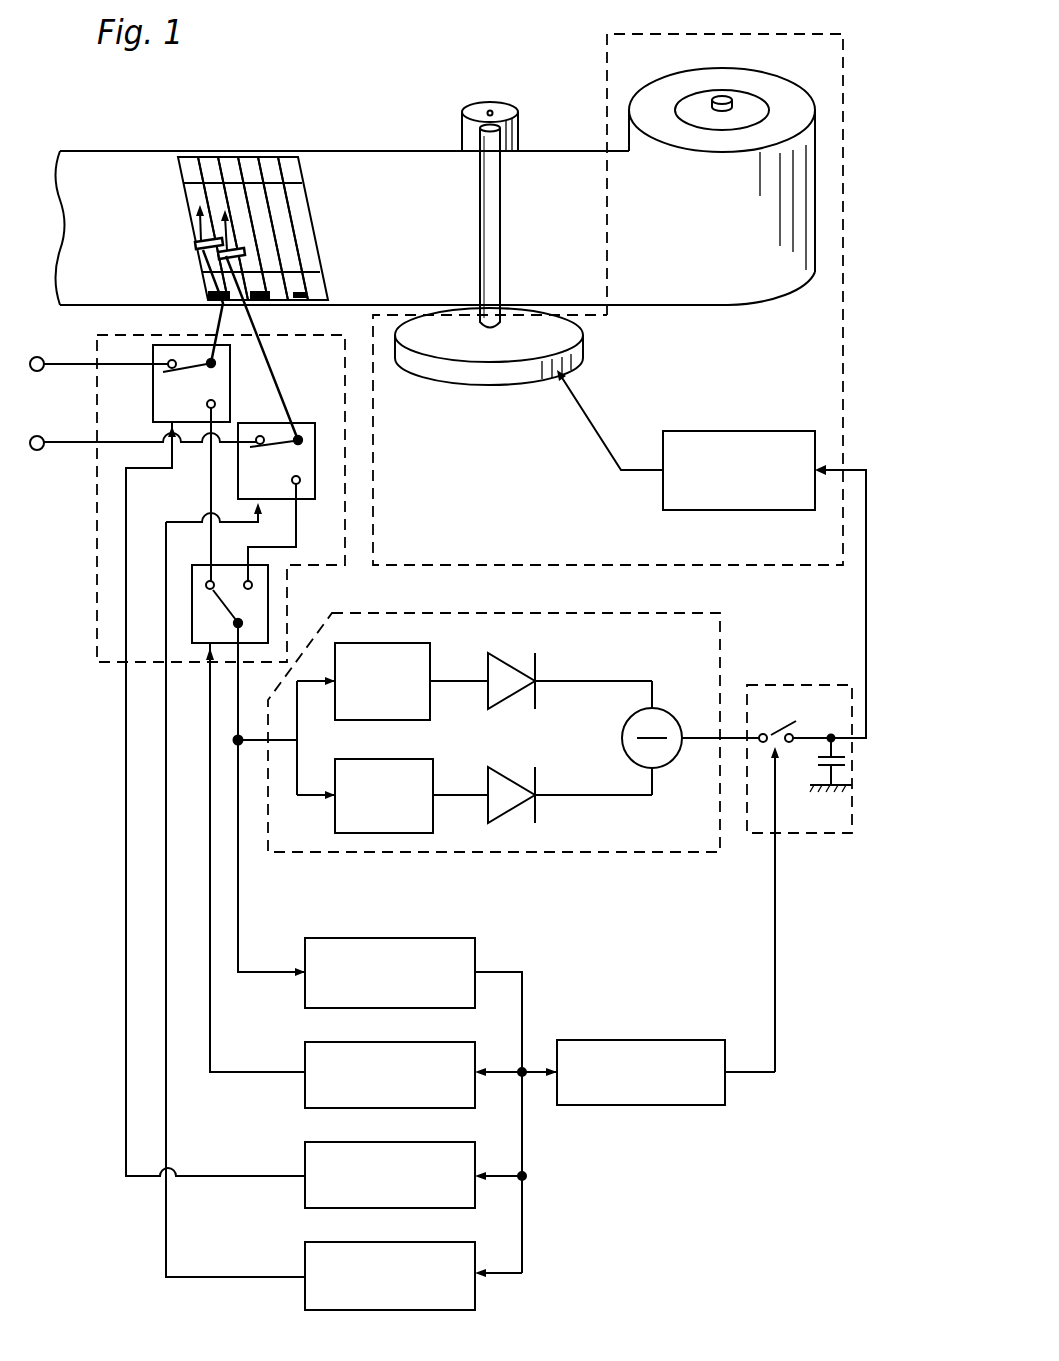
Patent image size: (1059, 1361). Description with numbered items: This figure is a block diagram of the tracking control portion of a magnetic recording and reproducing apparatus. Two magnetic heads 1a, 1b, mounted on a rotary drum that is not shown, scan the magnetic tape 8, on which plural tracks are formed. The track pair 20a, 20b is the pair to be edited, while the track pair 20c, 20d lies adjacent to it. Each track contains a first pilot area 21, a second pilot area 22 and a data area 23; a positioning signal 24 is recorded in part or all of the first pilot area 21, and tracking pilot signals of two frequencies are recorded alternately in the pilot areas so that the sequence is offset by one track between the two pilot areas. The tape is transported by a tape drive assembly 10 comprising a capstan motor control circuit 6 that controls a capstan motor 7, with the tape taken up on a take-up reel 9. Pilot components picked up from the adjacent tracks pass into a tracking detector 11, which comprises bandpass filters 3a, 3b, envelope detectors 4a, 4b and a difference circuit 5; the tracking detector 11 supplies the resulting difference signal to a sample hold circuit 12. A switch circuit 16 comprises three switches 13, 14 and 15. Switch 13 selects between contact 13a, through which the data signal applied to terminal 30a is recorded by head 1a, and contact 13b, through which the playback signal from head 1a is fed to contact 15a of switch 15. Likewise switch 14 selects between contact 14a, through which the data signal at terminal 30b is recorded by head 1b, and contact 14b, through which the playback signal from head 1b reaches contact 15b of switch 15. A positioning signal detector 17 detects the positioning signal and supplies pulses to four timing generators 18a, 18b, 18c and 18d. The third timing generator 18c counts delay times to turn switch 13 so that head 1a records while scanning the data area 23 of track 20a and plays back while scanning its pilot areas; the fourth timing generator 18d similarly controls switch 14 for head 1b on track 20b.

The magnetic head 1a is at (200, 205).
The magnetic head 1b is at (236, 214).
The bandpass filter 3a is at (403, 643).
The bandpass filter 3b is at (398, 759).
The envelope detector 4a is at (505, 671).
The envelope detector 4b is at (503, 781).
The difference circuit 5 is at (666, 762).
The capstan motor control circuit 6 is at (707, 510).
The capstan motor 7 is at (585, 347).
The magnetic tape 8 is at (552, 151).
The take-up reel 9 is at (725, 97).
The tape drive assembly 10 is at (843, 333).
The tracking detector 11 is at (598, 852).
The sample hold circuit 12 is at (801, 685).
The switch 13 is at (183, 346).
The contact 13a is at (168, 362).
The contact 13b is at (207, 404).
The switch 14 is at (334, 454).
The contact 14a is at (262, 436).
The contact 14b is at (316, 477).
The switch 15 is at (244, 602).
The contact 15a is at (207, 582).
The contact 15b is at (252, 586).
The switch circuit 16 is at (97, 606).
The positioning signal detector 17 is at (430, 938).
The timing generator 18a is at (630, 1040).
The timing generator 18b is at (318, 1042).
The third timing generator 18c is at (318, 1142).
The fourth timing generator 18d is at (312, 1242).
The track 20a is at (185, 157).
The track 20b is at (207, 157).
The track 20c is at (228, 157).
The track 20d is at (248, 157).
The first pilot area 21 is at (219, 255).
The second pilot area 22 is at (189, 185).
The data area 23 is at (197, 243).
The positioning signal 24 is at (207, 296).
The terminal 30a is at (44, 357).
The terminal 30b is at (44, 436).